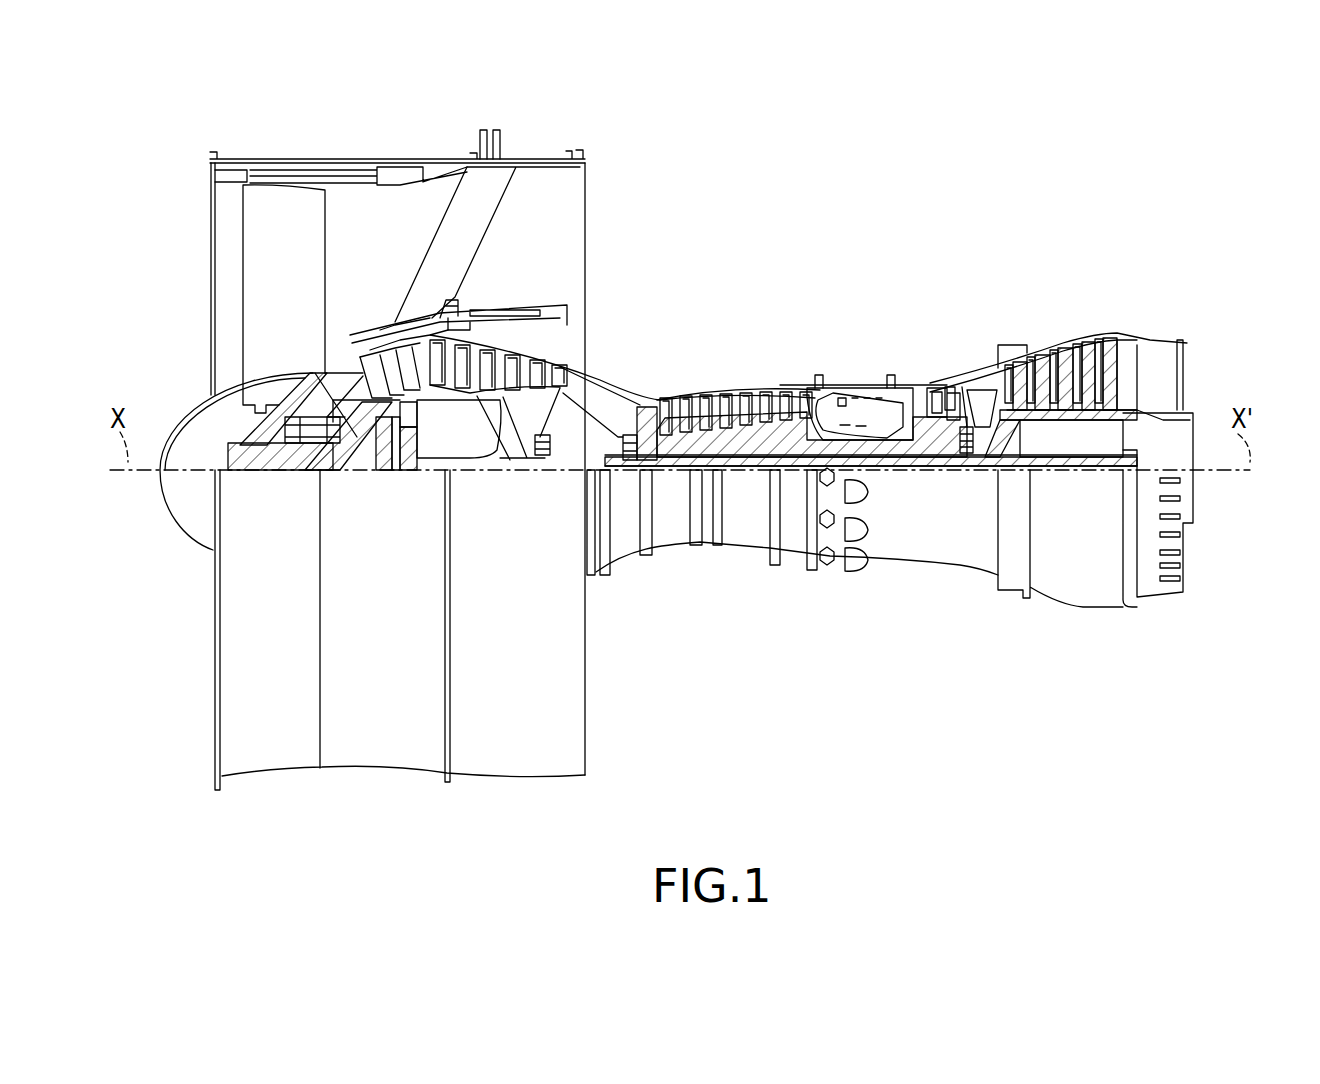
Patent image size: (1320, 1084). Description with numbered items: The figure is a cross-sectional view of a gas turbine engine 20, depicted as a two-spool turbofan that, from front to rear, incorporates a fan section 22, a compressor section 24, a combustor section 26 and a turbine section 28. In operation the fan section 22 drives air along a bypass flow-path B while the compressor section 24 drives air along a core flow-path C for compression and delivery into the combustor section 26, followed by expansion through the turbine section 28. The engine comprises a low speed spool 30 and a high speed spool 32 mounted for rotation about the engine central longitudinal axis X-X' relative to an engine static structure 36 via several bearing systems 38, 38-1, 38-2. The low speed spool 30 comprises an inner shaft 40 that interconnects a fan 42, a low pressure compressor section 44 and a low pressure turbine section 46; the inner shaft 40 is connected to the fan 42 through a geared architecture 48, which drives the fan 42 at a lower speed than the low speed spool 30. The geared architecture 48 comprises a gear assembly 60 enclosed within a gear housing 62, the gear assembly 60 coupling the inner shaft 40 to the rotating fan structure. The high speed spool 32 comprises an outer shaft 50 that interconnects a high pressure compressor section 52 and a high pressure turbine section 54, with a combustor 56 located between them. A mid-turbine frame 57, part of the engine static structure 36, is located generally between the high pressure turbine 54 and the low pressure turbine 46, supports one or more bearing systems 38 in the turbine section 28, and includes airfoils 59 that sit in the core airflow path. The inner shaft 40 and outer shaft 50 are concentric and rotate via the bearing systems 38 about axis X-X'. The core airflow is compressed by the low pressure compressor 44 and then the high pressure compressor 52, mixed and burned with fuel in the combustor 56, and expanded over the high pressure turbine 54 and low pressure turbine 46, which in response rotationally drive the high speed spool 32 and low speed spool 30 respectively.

The gas turbine engine 20 is at (912, 193).
The fan section 22 is at (440, 141).
The compressor section 24 is at (452, 270).
The combustor section 26 is at (915, 270).
The turbine section 28 is at (1126, 270).
The low speed spool 30 is at (752, 482).
The high speed spool 32 is at (790, 430).
The engine static structure 36 is at (380, 748).
The bearing system 38 is at (972, 465).
The bearing system 38-1 is at (298, 447).
The bearing system 38-2 is at (540, 455).
The inner shaft 40 is at (610, 470).
The fan 42 is at (284, 299).
The low pressure compressor section 44 is at (522, 368).
The low pressure turbine section 46 is at (1060, 355).
The geared architecture 48 is at (408, 485).
The outer shaft 50 is at (855, 452).
The high pressure compressor section 52 is at (733, 438).
The high pressure turbine section 54 is at (932, 388).
The combustor 56 is at (860, 405).
The mid-turbine frame 57 is at (966, 412).
The airfoils 59 is at (985, 395).
The gear assembly 60 is at (418, 452).
The gear housing 62 is at (414, 421).